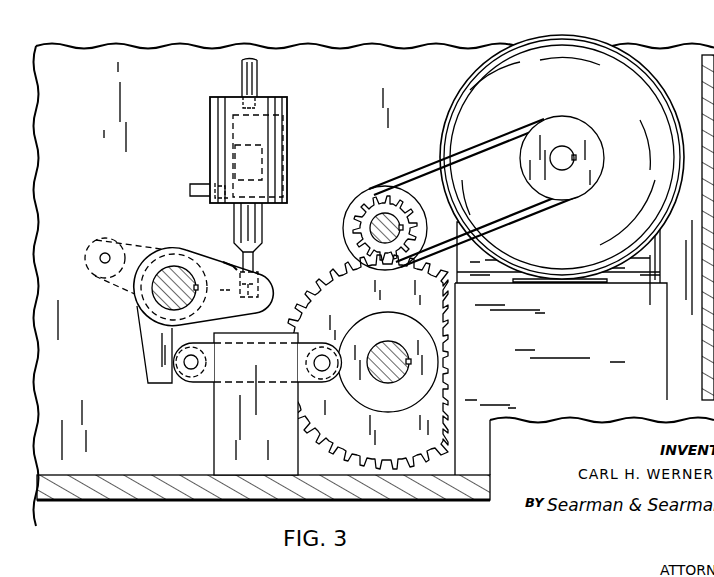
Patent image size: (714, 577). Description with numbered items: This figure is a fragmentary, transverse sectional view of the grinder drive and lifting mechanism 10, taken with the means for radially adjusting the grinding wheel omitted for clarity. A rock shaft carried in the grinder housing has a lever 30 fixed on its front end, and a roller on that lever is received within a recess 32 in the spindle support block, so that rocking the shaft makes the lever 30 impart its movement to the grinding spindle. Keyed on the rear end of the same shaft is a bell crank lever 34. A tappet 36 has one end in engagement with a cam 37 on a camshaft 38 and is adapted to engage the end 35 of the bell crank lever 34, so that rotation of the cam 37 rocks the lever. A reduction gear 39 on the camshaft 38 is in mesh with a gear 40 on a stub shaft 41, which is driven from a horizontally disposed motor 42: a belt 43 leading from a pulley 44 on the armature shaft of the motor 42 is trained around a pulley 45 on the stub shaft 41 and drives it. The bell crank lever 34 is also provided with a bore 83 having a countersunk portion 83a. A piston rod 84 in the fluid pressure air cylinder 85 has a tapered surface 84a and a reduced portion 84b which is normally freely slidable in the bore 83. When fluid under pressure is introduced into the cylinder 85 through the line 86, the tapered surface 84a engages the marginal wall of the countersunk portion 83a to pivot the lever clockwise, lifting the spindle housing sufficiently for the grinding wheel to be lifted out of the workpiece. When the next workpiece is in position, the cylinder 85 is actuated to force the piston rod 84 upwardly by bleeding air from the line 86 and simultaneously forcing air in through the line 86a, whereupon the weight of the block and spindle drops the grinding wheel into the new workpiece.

The machine 10 is at (90, 170).
The lever 30 is at (162, 254).
The recess 32 is at (106, 240).
The bell crank lever 34 is at (160, 313).
The end of the lever 35 is at (150, 385).
The tappet 36 is at (192, 382).
The cam 37 is at (422, 394).
The camshaft 38 is at (385, 380).
The reduction gear 39 is at (360, 434).
The gear 40 is at (362, 200).
The stub shaft 41 is at (386, 213).
The motor 42 is at (614, 103).
The belt 43 is at (510, 135).
The pulley 44 is at (560, 125).
The pulley 45 is at (346, 208).
The bore 83 is at (268, 278).
The countersunk portion 83a is at (223, 260).
The piston rod 84 is at (262, 162).
The tapered surface 84a is at (256, 252).
The reduced portion 84b is at (262, 290).
The fluid pressure cylinder 85 is at (283, 113).
The line 86 is at (247, 80).
The line 86a is at (197, 185).